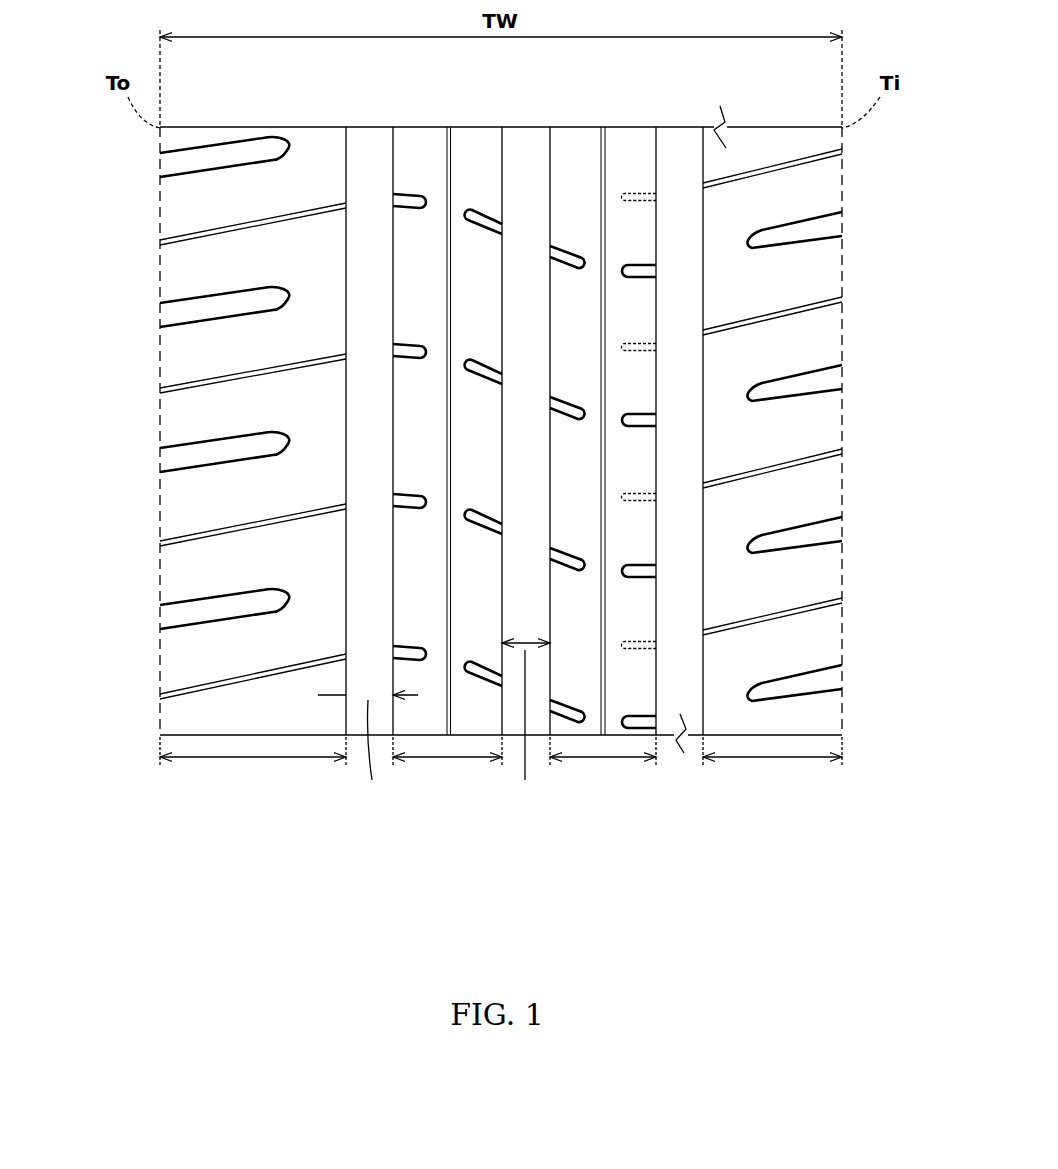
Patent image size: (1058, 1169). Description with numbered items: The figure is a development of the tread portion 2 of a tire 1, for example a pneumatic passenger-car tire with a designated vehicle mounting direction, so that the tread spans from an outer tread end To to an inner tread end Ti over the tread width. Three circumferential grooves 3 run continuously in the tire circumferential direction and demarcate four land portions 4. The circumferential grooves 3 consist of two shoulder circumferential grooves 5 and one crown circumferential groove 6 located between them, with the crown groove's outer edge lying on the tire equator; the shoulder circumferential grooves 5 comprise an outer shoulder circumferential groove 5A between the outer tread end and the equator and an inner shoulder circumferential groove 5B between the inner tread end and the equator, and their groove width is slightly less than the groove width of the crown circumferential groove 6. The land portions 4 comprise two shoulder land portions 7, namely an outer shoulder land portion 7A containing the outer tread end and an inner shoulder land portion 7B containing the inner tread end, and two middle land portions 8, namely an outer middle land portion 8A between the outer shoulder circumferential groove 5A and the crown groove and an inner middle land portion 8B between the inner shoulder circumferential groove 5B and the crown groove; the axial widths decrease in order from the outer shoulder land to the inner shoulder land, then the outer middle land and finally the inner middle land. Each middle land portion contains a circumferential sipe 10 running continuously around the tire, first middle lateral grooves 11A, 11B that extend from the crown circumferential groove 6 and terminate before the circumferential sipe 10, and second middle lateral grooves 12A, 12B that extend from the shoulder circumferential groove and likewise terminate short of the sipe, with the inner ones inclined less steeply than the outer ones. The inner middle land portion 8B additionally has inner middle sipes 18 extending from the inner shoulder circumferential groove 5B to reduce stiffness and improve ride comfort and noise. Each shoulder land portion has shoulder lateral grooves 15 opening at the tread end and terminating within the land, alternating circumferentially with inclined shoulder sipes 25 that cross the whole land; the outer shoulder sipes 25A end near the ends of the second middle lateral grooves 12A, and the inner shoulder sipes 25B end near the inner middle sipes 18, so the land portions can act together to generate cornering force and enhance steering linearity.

The tire 1 is at (660, 115).
The tread portion 2 is at (332, 118).
The circumferential grooves 3 is at (493, 438).
The land portions 4 is at (501, 392).
The shoulder circumferential grooves 5 is at (493, 438).
The outer shoulder circumferential groove 5A is at (368, 282).
The inner shoulder circumferential groove 5B is at (683, 641).
The crown circumferential groove 6 is at (530, 143).
The shoulder land portions 7 is at (501, 430).
The outer shoulder land portion 7A is at (275, 190).
The inner shoulder land portion 7B is at (755, 160).
The middle land portions 8 is at (524, 430).
The outer middle land portion 8A is at (470, 168).
The inner middle land portion 8B is at (627, 163).
The circumferential sipe 10 is at (447, 482).
The first middle lateral grooves 11A is at (483, 367).
The first middle lateral grooves 11B is at (565, 408).
The second middle lateral groove 12A is at (410, 348).
The second middle lateral groove 12B is at (640, 420).
The shoulder lateral grooves 15 is at (222, 607).
The inner middle sipes 18 is at (645, 493).
The shoulder sipes 25 is at (501, 424).
The shoulder sipe 25A is at (235, 383).
The shoulder sipe 25B is at (790, 460).